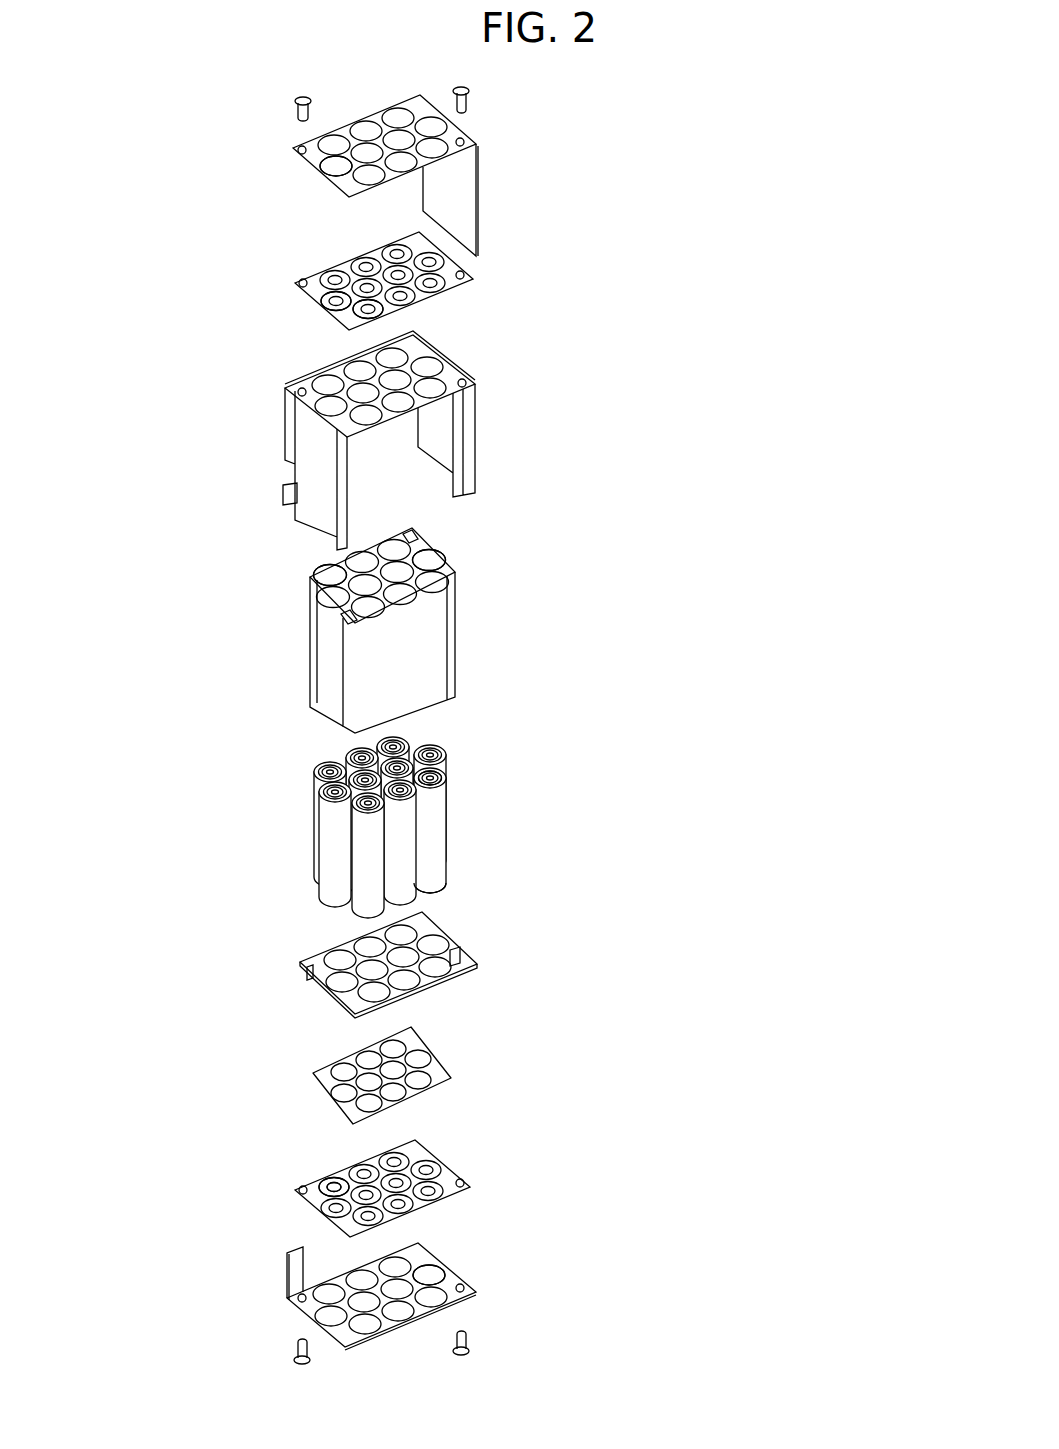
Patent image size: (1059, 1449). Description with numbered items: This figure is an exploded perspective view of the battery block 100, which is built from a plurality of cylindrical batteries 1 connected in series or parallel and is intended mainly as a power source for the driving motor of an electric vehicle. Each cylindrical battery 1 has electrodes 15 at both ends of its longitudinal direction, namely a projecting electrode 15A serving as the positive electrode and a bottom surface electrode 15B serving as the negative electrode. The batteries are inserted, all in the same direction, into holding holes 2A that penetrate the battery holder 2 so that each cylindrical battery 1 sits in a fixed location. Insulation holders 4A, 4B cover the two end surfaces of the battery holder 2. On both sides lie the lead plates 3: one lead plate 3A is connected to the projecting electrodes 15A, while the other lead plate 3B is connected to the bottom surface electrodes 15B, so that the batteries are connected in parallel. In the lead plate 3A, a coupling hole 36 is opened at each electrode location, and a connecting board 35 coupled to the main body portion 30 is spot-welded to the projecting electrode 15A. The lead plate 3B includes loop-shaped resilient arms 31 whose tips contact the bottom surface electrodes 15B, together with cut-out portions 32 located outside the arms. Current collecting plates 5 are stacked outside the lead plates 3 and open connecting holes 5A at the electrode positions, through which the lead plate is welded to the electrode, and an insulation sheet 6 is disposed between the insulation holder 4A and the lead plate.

The battery block 100 is at (576, 139).
The current collecting plate 5 is at (317, 158).
The connecting hole 5A is at (327, 167).
The main body portion 30 is at (457, 258).
The coupling hole 36 is at (324, 291).
The connecting board 35 is at (337, 318).
The insulation holder 4A is at (343, 420).
The lead plate 3A is at (506, 323).
The lead plate 3B is at (508, 1160).
The lead plate 3 is at (695, 421).
The battery holder 2 is at (427, 645).
The holding hole 2A is at (321, 553).
The cylindrical battery 1 is at (330, 840).
The electrode 15 is at (432, 829).
The projecting electrode 15A is at (448, 773).
The bottom surface electrode 15B is at (497, 901).
The insulation holder 4B is at (342, 1000).
The insulation sheet 6 is at (437, 1043).
The cut-out portion 32 is at (322, 1157).
The resilient arm 31 is at (317, 1192).